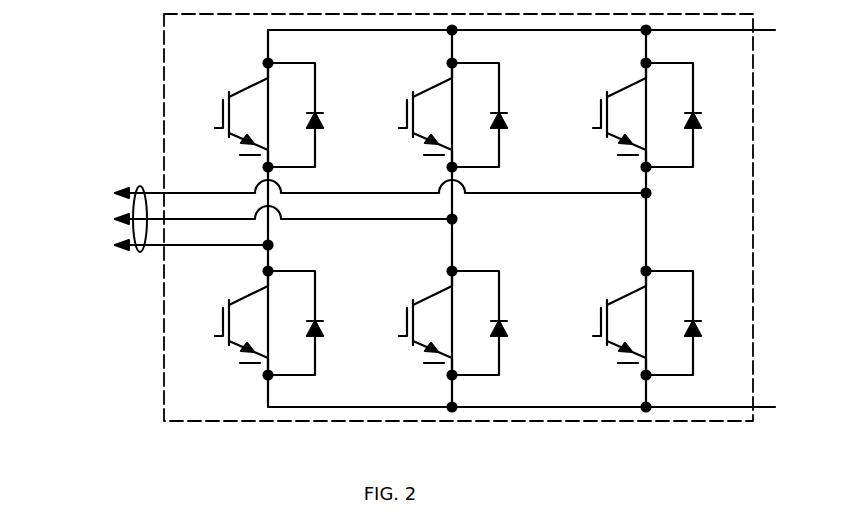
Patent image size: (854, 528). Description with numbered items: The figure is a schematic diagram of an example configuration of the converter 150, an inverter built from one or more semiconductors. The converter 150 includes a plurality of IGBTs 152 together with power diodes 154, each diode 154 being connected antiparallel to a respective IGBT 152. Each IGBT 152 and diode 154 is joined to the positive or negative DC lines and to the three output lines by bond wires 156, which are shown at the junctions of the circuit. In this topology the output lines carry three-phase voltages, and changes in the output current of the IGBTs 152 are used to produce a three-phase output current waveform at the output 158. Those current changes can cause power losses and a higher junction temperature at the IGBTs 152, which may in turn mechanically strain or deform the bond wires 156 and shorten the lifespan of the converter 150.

The converter 150 is at (162, 62).
The IGBT 152 is at (223, 119).
The power diode 154 is at (307, 123).
The bond wire 156 is at (270, 44).
The output 158 is at (140, 253).